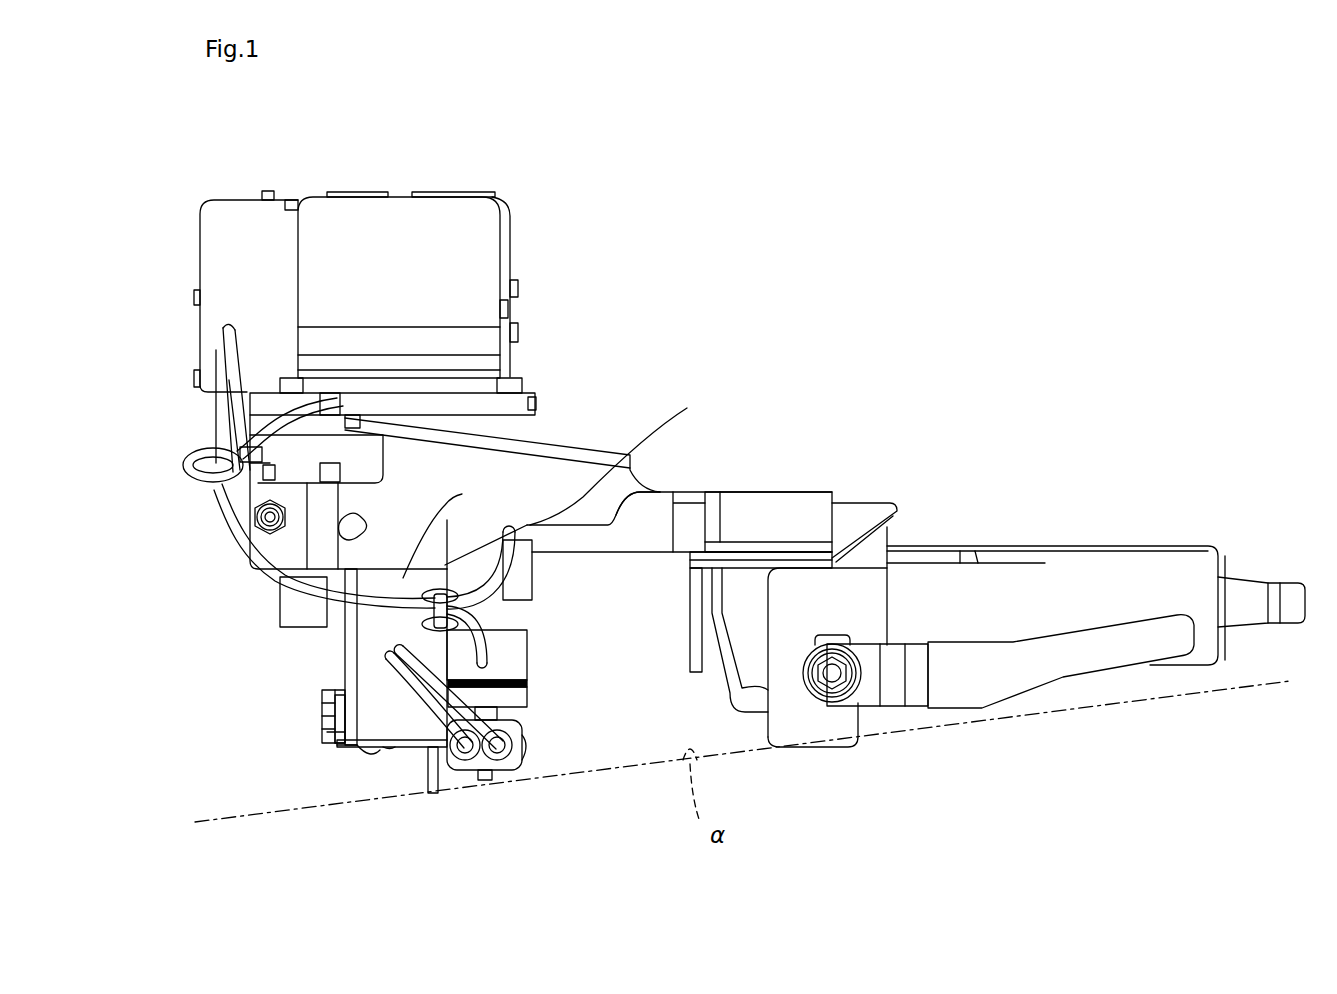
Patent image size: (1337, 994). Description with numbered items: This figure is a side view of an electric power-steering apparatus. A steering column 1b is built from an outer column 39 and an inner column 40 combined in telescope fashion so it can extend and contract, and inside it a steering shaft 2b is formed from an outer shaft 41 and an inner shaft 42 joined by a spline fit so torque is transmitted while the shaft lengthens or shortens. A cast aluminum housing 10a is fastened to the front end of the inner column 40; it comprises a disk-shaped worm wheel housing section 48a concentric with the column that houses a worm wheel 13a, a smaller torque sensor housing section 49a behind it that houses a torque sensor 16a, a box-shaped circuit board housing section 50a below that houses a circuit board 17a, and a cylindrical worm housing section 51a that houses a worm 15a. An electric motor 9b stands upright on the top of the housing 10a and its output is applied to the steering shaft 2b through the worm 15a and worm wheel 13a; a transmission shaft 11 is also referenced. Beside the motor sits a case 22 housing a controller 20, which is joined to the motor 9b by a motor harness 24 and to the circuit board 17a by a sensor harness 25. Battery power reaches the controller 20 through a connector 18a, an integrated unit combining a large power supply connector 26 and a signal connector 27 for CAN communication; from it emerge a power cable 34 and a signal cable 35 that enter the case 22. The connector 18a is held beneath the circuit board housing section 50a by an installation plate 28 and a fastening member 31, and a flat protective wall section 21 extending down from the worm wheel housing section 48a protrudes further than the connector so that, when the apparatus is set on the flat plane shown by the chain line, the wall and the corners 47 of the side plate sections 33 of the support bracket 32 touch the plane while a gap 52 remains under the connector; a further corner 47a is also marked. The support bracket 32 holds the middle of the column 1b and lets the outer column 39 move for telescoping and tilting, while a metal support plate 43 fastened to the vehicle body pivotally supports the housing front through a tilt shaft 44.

The steering column 1b is at (1047, 548).
The steering shaft 2b is at (1230, 590).
The electric motor 9b is at (465, 247).
The housing 10a is at (440, 555).
The transmission shaft 11 is at (293, 612).
The worm wheel 13a is at (378, 750).
The worm 15a is at (327, 732).
The torque sensor 16a is at (520, 520).
The circuit board 17a is at (530, 673).
The connector 18a is at (517, 777).
The controller 20 is at (230, 263).
The protective wall section 21 is at (428, 773).
The case 22 is at (283, 233).
The motor harness 24 is at (280, 467).
The sensor harness 25 is at (282, 600).
The power supply connector 26 is at (463, 760).
The signal connector 27 is at (520, 733).
The installation plate 28 is at (545, 700).
The fastening member 31 is at (500, 700).
The support bracket 32 is at (885, 722).
The side plate section 33 is at (787, 710).
The power cable 34 is at (320, 697).
The signal cable 35 is at (337, 745).
The outer column 39 is at (1003, 563).
The inner column 40 is at (650, 640).
The outer shaft 41 is at (1262, 593).
The inner shaft 42 is at (633, 607).
The support plate 43 is at (612, 523).
The tilt shaft 44 is at (255, 527).
The corner 47 is at (845, 715).
The corner 47a is at (1220, 665).
The worm wheel housing section 48a is at (383, 747).
The torque sensor housing section 49a is at (620, 458).
The circuit board housing section 50a is at (530, 650).
The worm housing section 51a is at (325, 700).
The gap 52 is at (495, 777).